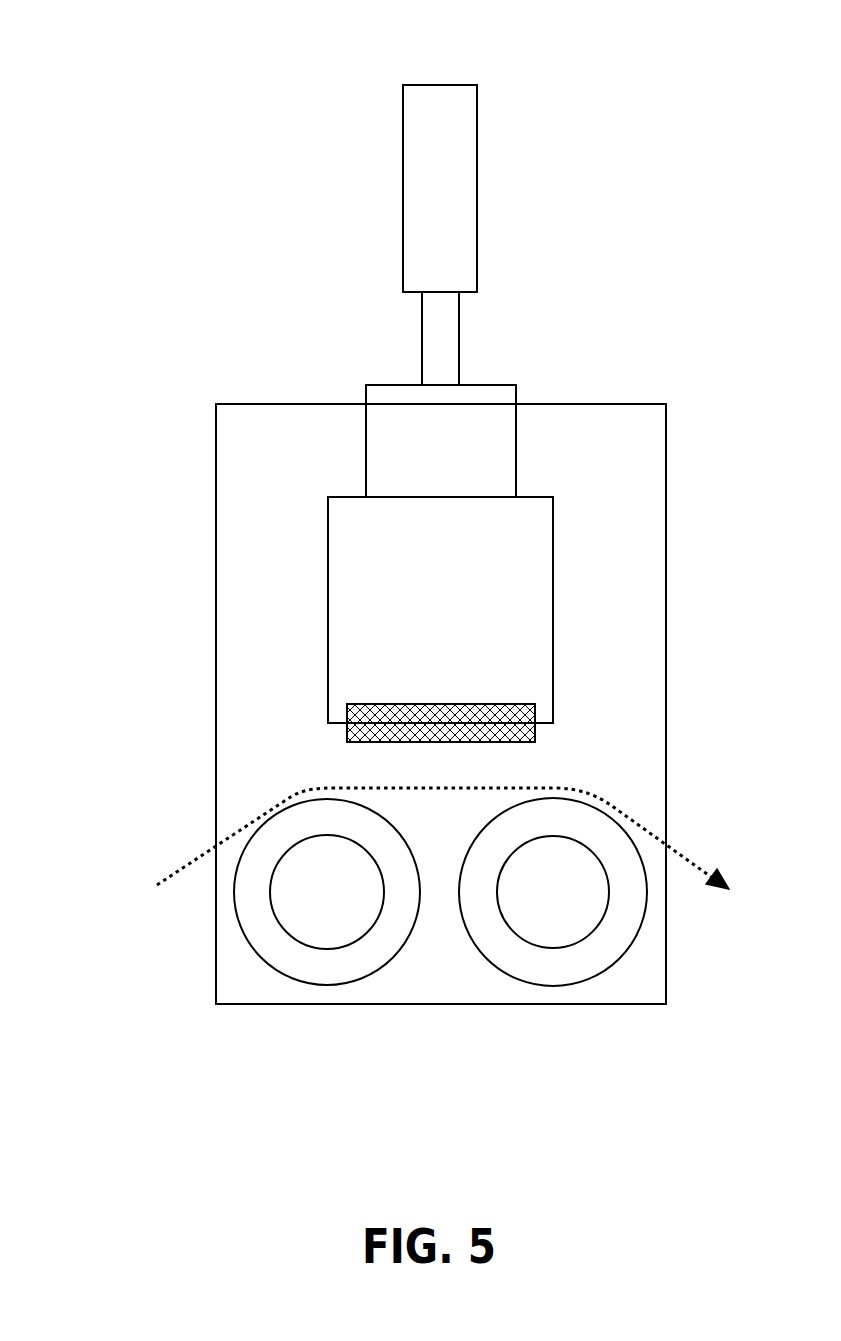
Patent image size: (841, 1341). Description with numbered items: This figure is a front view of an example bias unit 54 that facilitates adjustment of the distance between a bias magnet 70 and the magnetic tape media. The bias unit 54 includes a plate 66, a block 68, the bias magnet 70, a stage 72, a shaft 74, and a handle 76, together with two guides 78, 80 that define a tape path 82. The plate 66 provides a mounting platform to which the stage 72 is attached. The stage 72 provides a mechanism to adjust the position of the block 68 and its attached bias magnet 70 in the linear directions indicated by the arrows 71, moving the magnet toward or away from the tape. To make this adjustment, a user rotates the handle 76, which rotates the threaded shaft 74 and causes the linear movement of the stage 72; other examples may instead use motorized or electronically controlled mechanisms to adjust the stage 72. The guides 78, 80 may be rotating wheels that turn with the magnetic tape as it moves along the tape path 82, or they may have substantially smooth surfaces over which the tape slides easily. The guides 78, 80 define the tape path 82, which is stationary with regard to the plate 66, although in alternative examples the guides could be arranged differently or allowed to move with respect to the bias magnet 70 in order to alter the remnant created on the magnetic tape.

The bias unit 54 is at (127, 92).
The plate 66 is at (216, 599).
The block 68 is at (328, 567).
The bias magnet 70 is at (421, 704).
The arrows 71 is at (582, 630).
The stage 72 is at (516, 440).
The threaded shaft 74 is at (422, 349).
The handle 76 is at (403, 167).
The guide 78 is at (334, 985).
The guide 80 is at (573, 985).
The tape path 82 is at (429, 850).